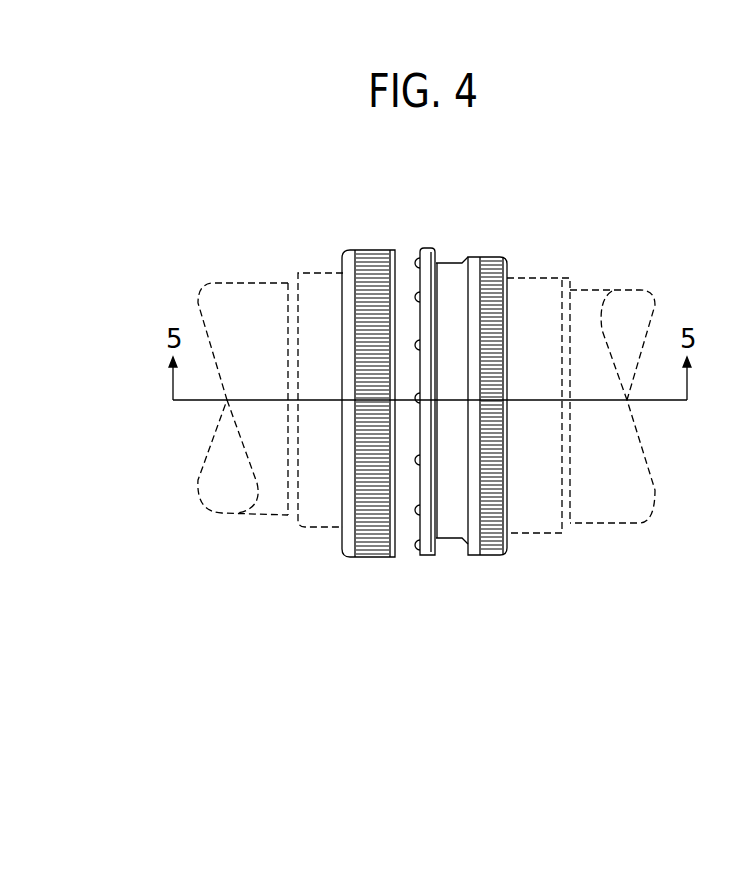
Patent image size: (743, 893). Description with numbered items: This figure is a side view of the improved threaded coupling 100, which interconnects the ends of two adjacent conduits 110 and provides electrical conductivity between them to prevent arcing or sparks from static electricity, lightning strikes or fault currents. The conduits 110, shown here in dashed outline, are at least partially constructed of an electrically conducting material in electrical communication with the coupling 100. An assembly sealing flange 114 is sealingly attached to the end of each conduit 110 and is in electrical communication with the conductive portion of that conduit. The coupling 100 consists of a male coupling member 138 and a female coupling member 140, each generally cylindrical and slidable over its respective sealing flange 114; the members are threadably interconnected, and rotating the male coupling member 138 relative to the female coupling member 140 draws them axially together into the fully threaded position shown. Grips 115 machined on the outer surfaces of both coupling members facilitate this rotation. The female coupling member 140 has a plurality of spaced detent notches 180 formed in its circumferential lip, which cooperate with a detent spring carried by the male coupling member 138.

The threaded coupling 100 is at (427, 224).
The cable 110 is at (263, 281).
The assembly sealing flange 114 is at (327, 272).
The grips 115 is at (489, 258).
The male coupling member 138 is at (486, 557).
The female coupling member 140 is at (403, 557).
The detent notches 180 is at (415, 262).